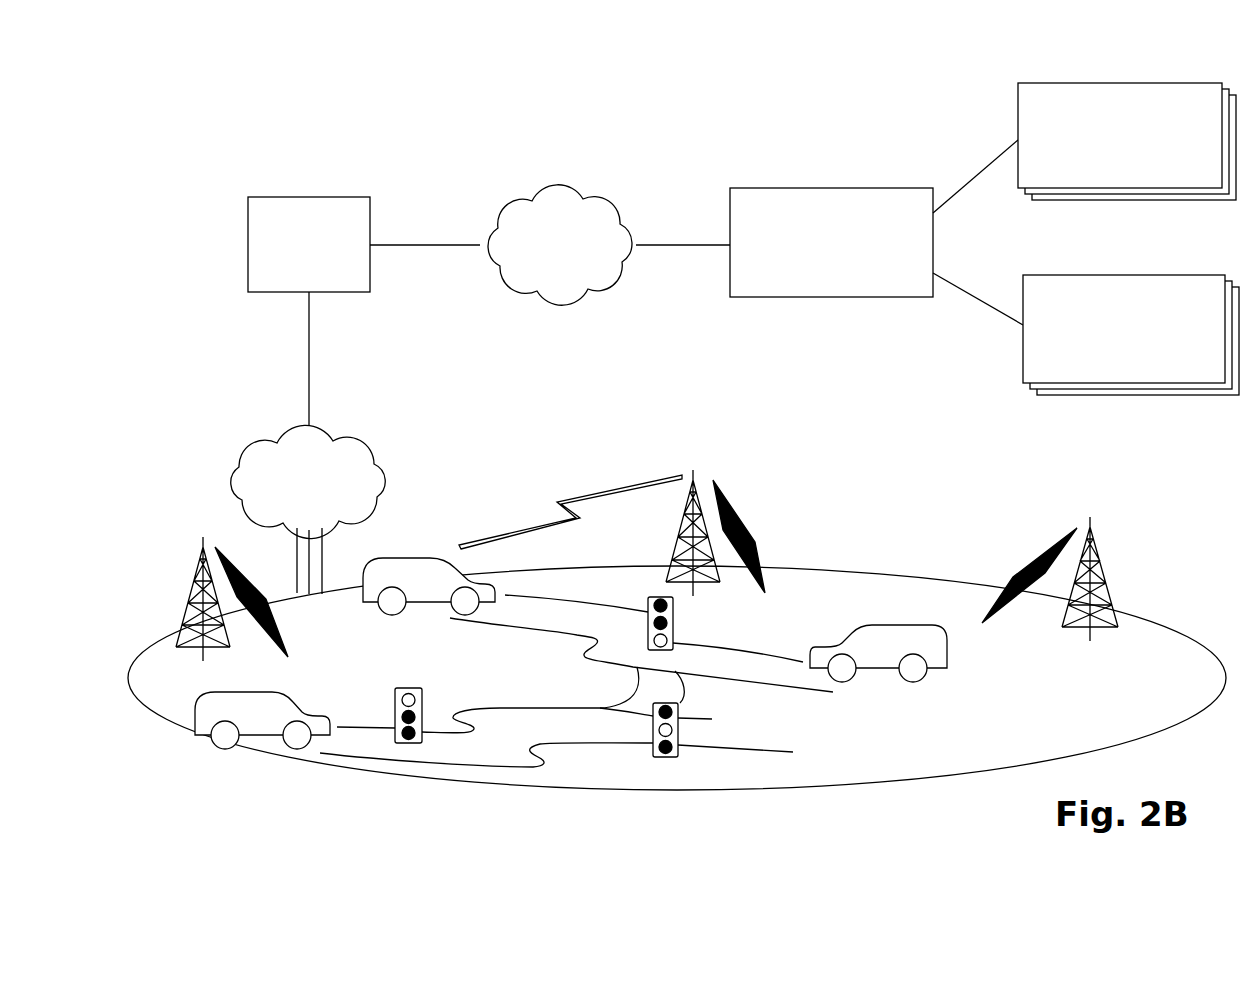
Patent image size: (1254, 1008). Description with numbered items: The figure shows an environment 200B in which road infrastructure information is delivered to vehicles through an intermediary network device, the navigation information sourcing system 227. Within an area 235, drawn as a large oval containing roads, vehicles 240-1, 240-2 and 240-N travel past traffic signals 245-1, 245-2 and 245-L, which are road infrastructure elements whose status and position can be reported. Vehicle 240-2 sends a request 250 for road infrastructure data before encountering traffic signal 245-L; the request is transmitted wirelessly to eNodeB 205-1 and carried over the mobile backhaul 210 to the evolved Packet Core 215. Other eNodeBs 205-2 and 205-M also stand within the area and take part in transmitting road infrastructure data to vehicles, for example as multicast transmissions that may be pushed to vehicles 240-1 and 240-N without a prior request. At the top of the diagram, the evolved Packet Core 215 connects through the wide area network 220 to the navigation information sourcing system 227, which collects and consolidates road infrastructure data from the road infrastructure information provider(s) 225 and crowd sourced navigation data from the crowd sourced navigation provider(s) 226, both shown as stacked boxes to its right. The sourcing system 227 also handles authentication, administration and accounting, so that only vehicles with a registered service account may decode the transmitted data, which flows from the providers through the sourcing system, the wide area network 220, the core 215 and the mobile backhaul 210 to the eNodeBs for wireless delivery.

The environment 200B is at (678, 458).
The eNodeB 205-1 is at (677, 531).
The eNodeB 205-2 is at (200, 546).
The eNodeB 205-M is at (1112, 587).
The mobile backhaul 210 is at (390, 443).
The evolved Packet Core 215 is at (373, 212).
The wide area network 220 is at (592, 192).
The road infrastructure information provider(s) 225 is at (1133, 201).
The crowd sourced navigation provider(s) 226 is at (1138, 397).
The navigation information sourcing system 227 is at (830, 297).
The area 235 is at (645, 783).
The vehicle 240-1 is at (337, 687).
The vehicle 240-2 is at (417, 557).
The vehicle 240-N is at (885, 618).
The traffic signal 245-1 is at (407, 680).
The traffic signal 245-2 is at (680, 753).
The traffic signal 245-L is at (675, 608).
The request 250 is at (565, 502).